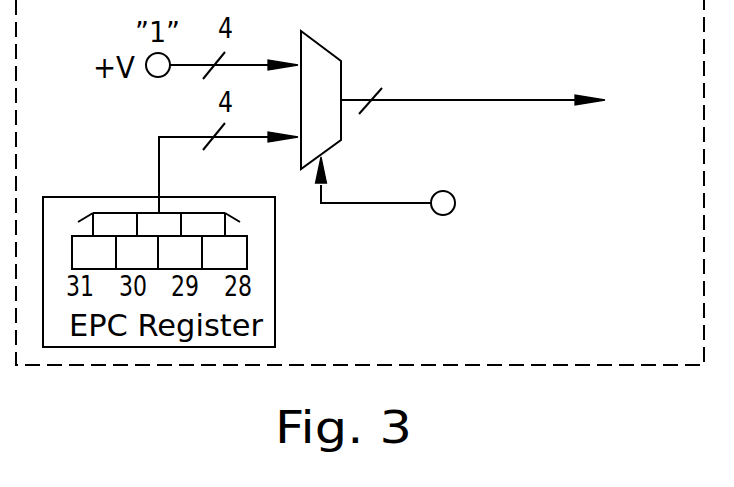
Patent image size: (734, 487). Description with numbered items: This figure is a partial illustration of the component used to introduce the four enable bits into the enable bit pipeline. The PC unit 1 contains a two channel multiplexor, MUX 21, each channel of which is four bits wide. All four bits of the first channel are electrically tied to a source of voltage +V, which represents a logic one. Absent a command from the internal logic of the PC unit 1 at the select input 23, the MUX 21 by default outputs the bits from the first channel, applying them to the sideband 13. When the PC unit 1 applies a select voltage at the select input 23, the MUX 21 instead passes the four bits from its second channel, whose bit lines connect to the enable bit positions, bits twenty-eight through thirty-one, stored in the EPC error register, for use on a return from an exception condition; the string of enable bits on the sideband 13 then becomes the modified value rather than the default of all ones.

The PC unit 1 is at (360, 182).
The sideband 13 is at (501, 83).
The two channel multiplexor (MUX) 21 is at (323, 55).
The select input 23 is at (370, 203).